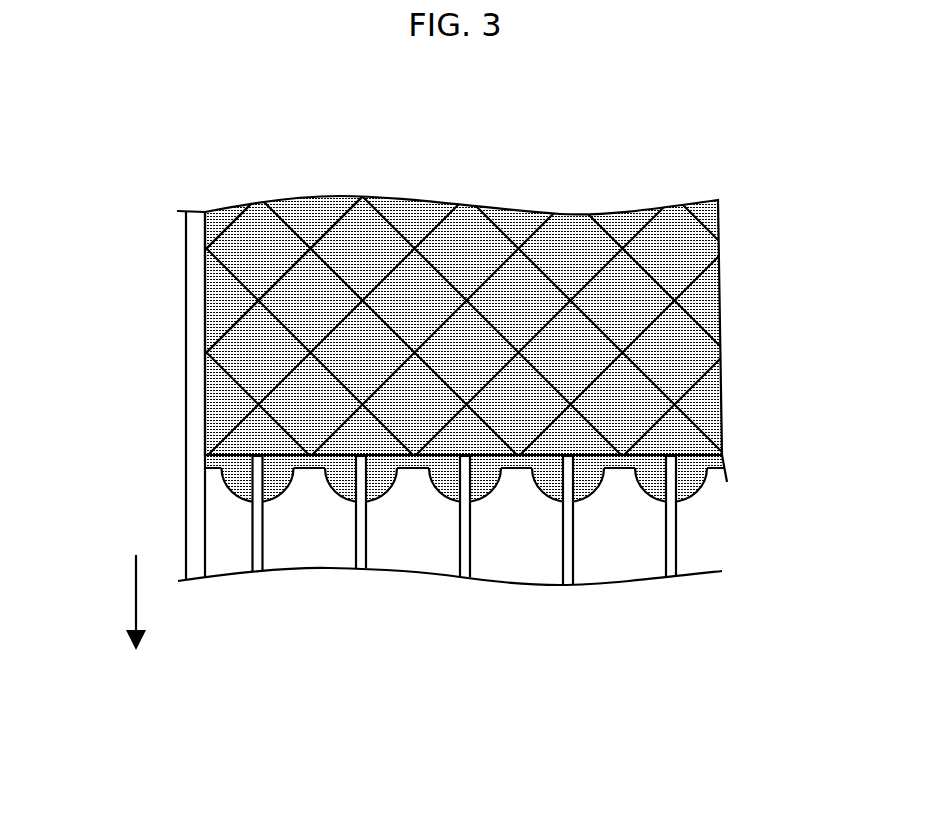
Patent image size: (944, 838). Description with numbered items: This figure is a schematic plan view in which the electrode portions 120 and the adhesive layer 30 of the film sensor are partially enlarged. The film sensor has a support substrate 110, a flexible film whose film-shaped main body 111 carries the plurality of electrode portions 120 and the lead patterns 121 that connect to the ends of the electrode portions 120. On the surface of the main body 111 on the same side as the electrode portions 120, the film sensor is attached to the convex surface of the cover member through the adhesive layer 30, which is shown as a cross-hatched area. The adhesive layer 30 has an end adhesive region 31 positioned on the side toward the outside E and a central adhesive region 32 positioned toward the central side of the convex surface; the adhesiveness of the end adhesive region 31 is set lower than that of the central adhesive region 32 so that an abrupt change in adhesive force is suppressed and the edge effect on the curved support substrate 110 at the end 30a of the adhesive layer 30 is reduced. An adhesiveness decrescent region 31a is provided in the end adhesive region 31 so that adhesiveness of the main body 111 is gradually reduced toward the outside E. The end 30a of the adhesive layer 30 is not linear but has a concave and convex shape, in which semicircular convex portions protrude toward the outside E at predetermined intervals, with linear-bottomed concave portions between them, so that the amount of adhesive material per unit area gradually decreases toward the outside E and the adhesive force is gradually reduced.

The adhesive layer 30 is at (462, 243).
The end of the adhesive layer 30a is at (550, 502).
The end adhesive region 31 is at (535, 479).
The adhesiveness decrescent region 31a is at (464, 478).
The central adhesive region 32 is at (745, 200).
The support substrate 110 is at (190, 283).
The main body 111 is at (197, 380).
The electrode portions 120 is at (262, 240).
The lead patterns 121 is at (257, 548).
The outside E is at (133, 601).